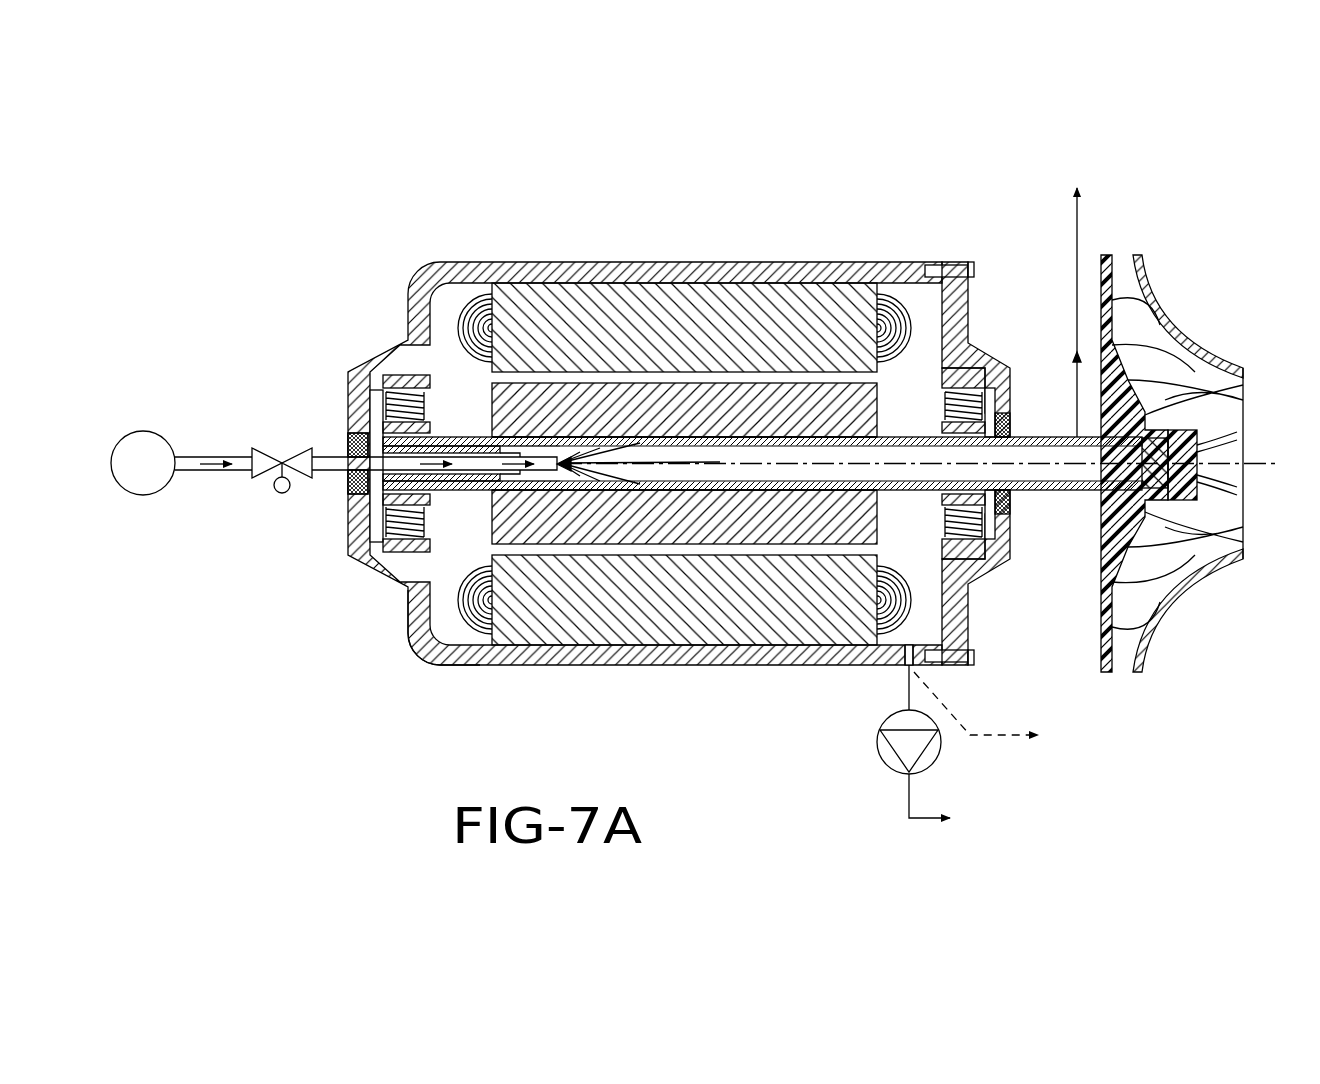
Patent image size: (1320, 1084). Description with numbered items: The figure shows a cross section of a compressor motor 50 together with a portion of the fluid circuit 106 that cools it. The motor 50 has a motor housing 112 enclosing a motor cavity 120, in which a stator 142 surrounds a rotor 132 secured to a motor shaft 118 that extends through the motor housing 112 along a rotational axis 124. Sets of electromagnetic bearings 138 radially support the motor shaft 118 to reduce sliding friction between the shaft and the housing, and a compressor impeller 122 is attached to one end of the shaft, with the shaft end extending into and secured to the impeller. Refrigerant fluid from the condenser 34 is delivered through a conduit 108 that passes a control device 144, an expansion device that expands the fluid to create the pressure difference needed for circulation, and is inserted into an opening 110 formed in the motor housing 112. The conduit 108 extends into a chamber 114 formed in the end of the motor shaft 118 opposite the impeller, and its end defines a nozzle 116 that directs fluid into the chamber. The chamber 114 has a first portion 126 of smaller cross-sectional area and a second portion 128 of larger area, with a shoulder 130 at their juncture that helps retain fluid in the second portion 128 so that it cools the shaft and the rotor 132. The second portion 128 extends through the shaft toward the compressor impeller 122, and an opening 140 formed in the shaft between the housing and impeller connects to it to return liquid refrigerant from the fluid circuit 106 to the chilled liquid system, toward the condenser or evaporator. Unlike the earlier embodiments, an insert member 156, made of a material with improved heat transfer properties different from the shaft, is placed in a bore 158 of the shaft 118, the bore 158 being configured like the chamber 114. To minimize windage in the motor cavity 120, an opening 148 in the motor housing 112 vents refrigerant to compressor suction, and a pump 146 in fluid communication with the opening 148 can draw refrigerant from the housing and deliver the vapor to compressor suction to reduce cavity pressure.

The fluid circuit 106 is at (236, 310).
The conduit 108 is at (186, 457).
The opening 110 is at (348, 448).
The motor housing 112 is at (630, 262).
The chamber 114 is at (905, 453).
The nozzle 116 is at (549, 458).
The motor shaft 118 is at (1062, 492).
The motor cavity 120 is at (440, 630).
The compressor impeller 122 is at (1178, 346).
The rotational axis 124 is at (1262, 463).
The first portion 126 is at (480, 462).
The second portion 128 is at (778, 476).
The shoulder 130 is at (520, 485).
The rotor 132 is at (490, 383).
The condenser 34 is at (125, 477).
The electromagnetic bearings 138 is at (381, 553).
The opening 140 is at (1060, 445).
The stator 142 is at (472, 300).
The control device 144 is at (255, 479).
The pump 146 is at (877, 743).
The opening 148 is at (905, 668).
The insert member 156 is at (1036, 492).
The bore 158 is at (880, 470).
The motor 50 is at (970, 296).